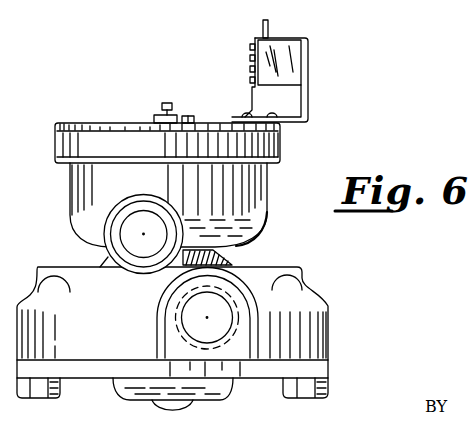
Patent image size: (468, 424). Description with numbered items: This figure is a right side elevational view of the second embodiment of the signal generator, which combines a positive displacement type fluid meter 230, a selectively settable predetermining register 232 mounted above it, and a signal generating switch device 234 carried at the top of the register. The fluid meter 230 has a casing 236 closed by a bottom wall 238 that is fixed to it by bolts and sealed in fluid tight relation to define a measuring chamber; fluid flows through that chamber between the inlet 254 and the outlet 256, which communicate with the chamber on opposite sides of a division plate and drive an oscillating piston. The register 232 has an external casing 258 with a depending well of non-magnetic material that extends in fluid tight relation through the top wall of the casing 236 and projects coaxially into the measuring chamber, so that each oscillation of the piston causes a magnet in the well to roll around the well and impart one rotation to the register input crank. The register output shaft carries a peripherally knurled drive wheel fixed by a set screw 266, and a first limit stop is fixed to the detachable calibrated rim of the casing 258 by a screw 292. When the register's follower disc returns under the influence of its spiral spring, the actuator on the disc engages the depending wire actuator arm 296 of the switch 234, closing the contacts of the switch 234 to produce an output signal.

The positive displacement type fluid meter 230 is at (320, 305).
The selectively settable predetermining register 232 is at (267, 194).
The signal generating switch device 234 is at (310, 47).
The casing 236 is at (329, 323).
The bottom wall 238 is at (250, 365).
The inlet 254 is at (129, 240).
The outlet 256 is at (184, 319).
The external casing 258 is at (260, 225).
The set screw 266 is at (190, 117).
The screw 292 is at (167, 103).
The depending wire actuator arm 296 is at (248, 117).